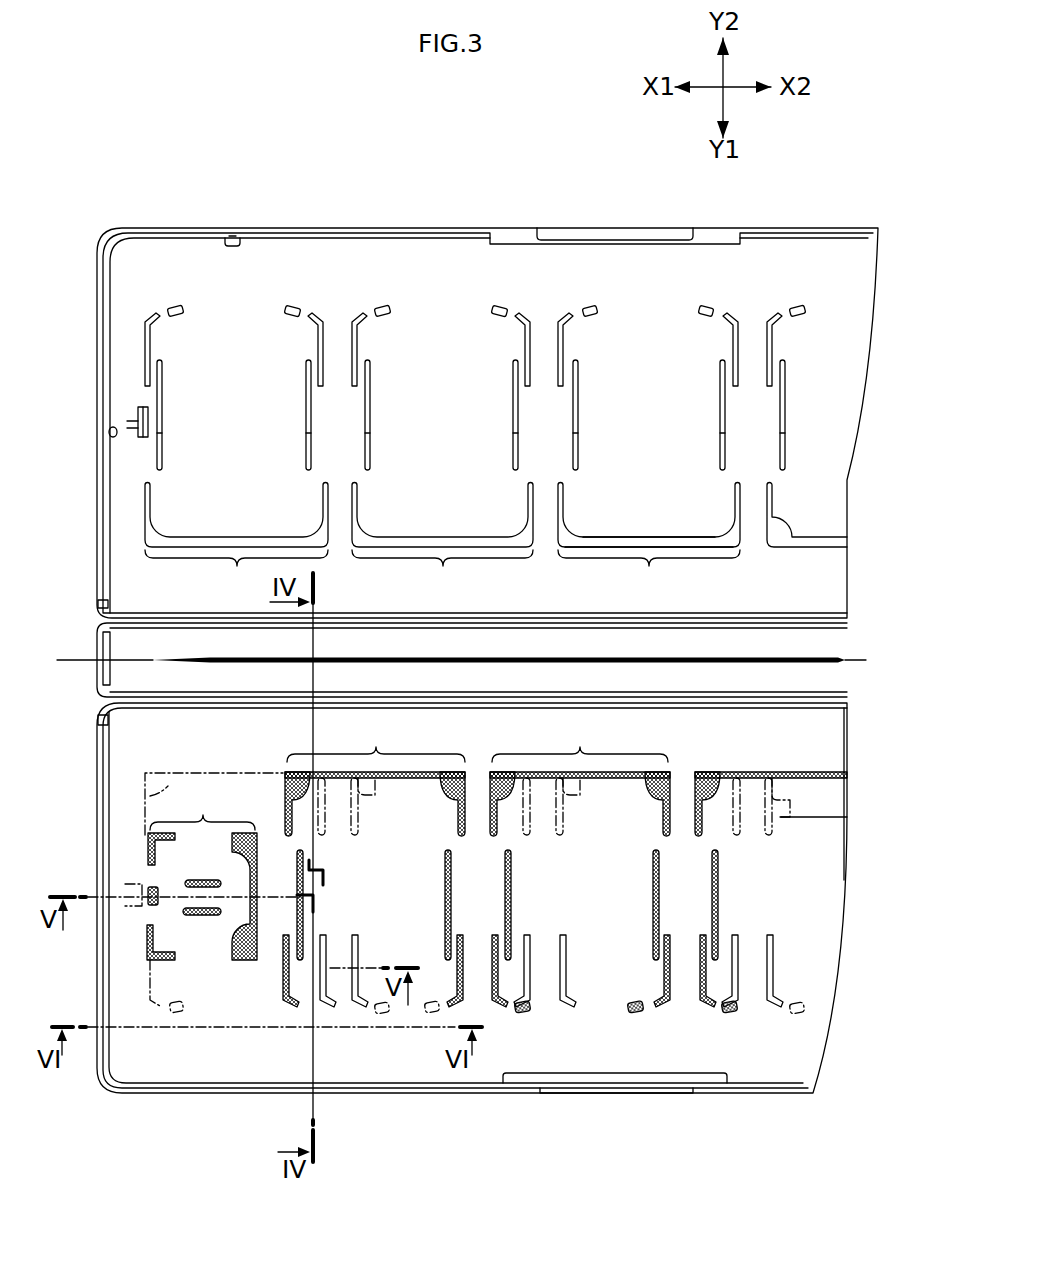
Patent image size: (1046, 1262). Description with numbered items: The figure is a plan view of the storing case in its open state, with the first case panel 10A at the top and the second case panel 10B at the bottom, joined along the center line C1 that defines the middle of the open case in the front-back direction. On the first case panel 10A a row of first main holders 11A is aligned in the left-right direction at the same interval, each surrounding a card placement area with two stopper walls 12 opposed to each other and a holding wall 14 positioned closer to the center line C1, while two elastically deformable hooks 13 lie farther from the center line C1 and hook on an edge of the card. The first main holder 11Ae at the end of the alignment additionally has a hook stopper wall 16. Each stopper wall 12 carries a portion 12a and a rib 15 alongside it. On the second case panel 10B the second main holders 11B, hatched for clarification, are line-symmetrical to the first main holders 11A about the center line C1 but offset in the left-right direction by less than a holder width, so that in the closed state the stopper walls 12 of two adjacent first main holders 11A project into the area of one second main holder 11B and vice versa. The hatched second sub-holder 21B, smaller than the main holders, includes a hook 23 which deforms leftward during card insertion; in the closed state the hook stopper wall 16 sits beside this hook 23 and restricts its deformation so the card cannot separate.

The first case panel 10A is at (447, 250).
The second case panel 10B is at (600, 1048).
The first main holder 11A is at (599, 541).
The first main holder at the end of the alignment 11Ae is at (223, 543).
The second main holder 11B is at (566, 778).
The stopper wall 12 is at (563, 338).
The contact tab 12a is at (573, 316).
The hook 13 is at (588, 310).
The holding wall 14 is at (648, 545).
The rib 15 is at (577, 405).
The hook stopper wall 16 is at (135, 413).
The second sub-holder 21B is at (214, 889).
The hook 23 is at (160, 890).
The center line C1 is at (480, 660).